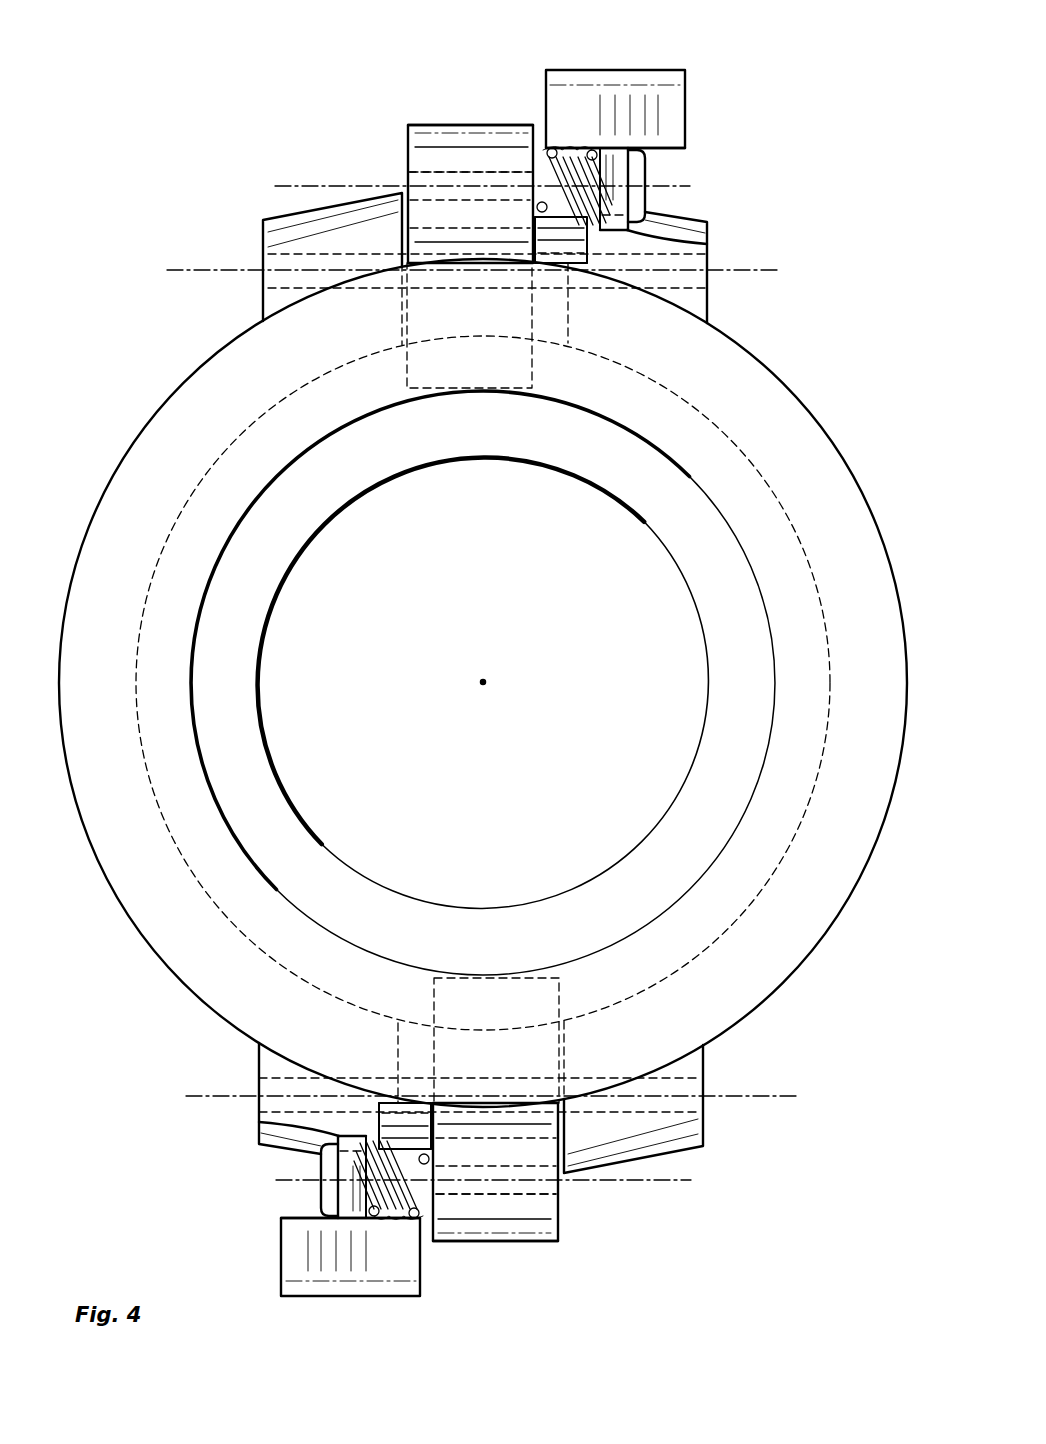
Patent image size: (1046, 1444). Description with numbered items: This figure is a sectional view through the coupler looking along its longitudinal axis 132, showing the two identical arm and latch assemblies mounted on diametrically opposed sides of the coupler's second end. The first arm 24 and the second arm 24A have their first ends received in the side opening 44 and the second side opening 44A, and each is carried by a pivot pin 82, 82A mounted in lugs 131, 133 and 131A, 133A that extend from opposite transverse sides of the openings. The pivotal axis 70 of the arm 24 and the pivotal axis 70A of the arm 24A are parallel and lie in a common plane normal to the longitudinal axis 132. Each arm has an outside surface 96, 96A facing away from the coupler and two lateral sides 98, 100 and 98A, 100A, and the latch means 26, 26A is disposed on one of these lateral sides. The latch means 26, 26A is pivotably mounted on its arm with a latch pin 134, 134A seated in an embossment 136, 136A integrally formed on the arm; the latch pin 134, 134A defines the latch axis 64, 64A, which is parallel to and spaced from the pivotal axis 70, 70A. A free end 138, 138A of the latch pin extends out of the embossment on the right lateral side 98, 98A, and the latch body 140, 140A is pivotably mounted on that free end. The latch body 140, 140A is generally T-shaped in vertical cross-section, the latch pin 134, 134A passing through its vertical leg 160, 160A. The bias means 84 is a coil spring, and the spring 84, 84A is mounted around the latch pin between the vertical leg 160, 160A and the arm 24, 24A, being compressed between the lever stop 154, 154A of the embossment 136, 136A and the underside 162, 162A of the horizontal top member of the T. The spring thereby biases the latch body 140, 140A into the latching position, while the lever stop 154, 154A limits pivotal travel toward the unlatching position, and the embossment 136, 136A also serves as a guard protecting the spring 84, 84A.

The arm 24 is at (522, 1225).
The second arm 24A is at (440, 140).
The latch means 26 is at (310, 1288).
The second latch means 26A is at (665, 75).
The side opening 44 is at (565, 1045).
The second side opening 44A is at (402, 327).
The latch axis 64 is at (660, 1181).
The latch axis 64A is at (315, 186).
The pivotal axis 70 is at (765, 1096).
The pivotal axis 70A is at (778, 273).
The pivot pin 82 is at (708, 1085).
The pivot pin 82A is at (262, 286).
The bias means 84 is at (397, 1187).
The spring 84A is at (577, 170).
The outside surface 96 is at (503, 1241).
The outside surface 96A is at (465, 125).
The lateral side 98 is at (415, 995).
The lateral side 98A is at (553, 378).
The lateral side 100 is at (575, 992).
The lateral side 100A is at (397, 393).
The lug 131 is at (672, 1147).
The lug 131A is at (707, 222).
The longitudinal axis 132 is at (485, 677).
The lug 133 is at (262, 1147).
The lug 133A is at (288, 235).
The latch pin 134 is at (568, 1190).
The latch pin 134A is at (415, 180).
The embossment 136 is at (392, 1112).
The embossment 136A is at (563, 247).
The free end 138 is at (332, 1203).
The free end 138A is at (643, 190).
The latch body 140 is at (355, 1213).
The latch body 140A is at (645, 160).
The lever stop 154 is at (412, 1140).
The lever stop 154A is at (553, 222).
The vertical leg 160 is at (272, 1130).
The vertical leg 160A is at (710, 244).
The underside 162 is at (423, 1213).
The underside 162A is at (542, 160).